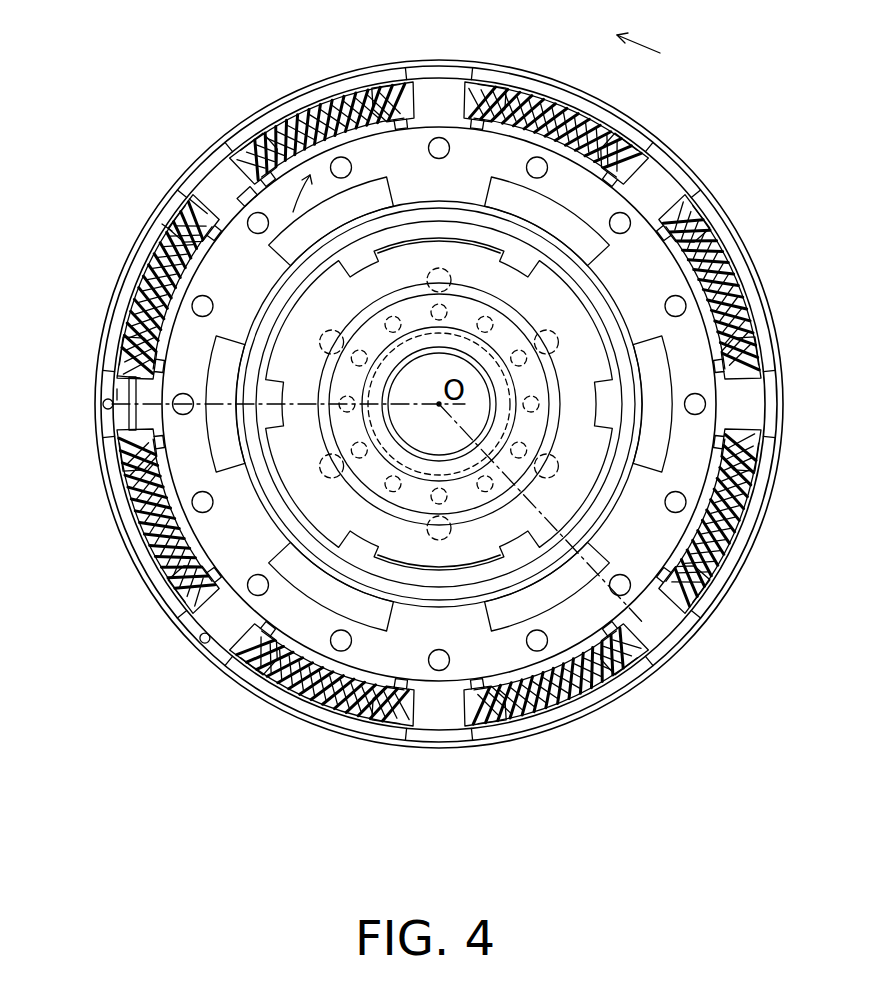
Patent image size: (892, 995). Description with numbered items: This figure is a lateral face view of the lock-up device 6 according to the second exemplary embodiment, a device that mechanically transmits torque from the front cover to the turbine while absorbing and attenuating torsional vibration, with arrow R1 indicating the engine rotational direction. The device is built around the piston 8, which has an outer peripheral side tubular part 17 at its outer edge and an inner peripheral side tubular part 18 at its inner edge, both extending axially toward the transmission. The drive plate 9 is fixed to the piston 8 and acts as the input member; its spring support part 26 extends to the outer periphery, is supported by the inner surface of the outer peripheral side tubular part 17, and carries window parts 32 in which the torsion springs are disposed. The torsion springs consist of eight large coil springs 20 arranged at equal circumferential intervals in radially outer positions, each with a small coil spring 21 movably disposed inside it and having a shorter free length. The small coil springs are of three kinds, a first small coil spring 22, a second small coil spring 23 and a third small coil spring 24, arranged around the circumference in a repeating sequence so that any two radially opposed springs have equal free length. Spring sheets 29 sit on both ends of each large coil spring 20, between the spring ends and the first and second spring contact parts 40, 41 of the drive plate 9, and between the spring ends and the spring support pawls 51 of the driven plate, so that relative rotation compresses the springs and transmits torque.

The lock-up device 6 is at (738, 152).
The piston 8 is at (193, 160).
The drive plate 9 is at (217, 157).
The outer peripheral side tubular part 17 is at (280, 100).
The inner peripheral side tubular part 18 is at (401, 437).
The large coil spring 20 is at (380, 87).
The small coil spring 21 is at (570, 90).
The first small coil spring 22 is at (738, 253).
The second small coil spring 23 is at (523, 93).
The third small coil spring 24 is at (320, 97).
The spring support part 26 is at (250, 133).
The spring sheet 29 is at (105, 433).
The window part 32 is at (250, 198).
The first spring contact part 40 is at (197, 205).
The second spring contact part 41 is at (167, 227).
The spring support pawl 51 is at (116, 415).
The engine rotational direction R1 is at (649, 34).